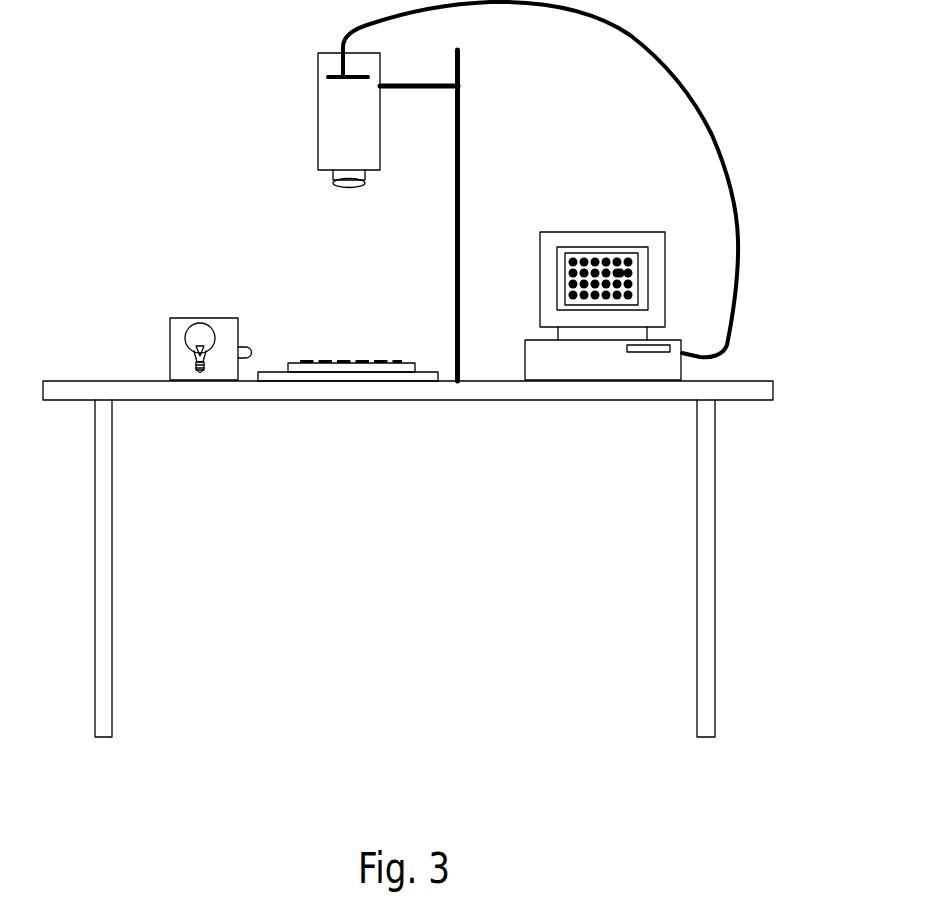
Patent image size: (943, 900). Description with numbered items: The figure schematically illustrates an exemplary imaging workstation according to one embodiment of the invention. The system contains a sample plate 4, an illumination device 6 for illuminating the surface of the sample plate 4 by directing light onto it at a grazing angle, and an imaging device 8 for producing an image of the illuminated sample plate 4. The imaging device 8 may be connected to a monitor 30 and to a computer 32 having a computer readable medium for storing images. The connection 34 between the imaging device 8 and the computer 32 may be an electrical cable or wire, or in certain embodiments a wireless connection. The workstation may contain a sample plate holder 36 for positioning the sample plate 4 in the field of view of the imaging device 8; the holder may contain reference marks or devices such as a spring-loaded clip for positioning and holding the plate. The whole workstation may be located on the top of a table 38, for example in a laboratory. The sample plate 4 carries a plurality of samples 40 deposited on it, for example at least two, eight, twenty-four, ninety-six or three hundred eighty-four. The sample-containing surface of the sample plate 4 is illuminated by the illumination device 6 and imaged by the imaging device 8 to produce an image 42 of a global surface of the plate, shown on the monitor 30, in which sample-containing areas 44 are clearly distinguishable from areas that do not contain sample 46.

The sample plate 4 is at (297, 372).
The illumination device 6 is at (188, 322).
The imaging device 8 is at (332, 113).
The monitor 30 is at (547, 264).
The computer 32 is at (548, 367).
The connection 34 is at (713, 125).
The sample plate holder 36 is at (365, 372).
The table 38 is at (443, 393).
The samples 40 is at (325, 352).
The image 42 is at (600, 253).
The sample-containing areas 44 is at (628, 262).
The areas that do not contain sample 46 is at (620, 273).